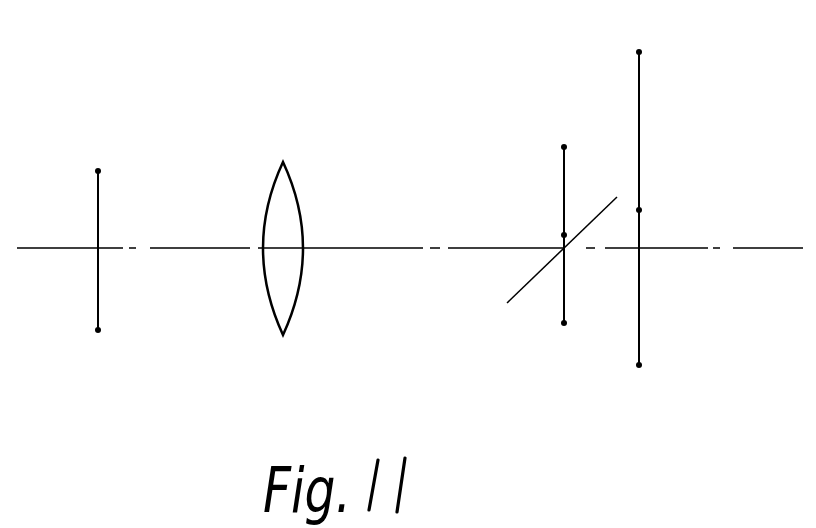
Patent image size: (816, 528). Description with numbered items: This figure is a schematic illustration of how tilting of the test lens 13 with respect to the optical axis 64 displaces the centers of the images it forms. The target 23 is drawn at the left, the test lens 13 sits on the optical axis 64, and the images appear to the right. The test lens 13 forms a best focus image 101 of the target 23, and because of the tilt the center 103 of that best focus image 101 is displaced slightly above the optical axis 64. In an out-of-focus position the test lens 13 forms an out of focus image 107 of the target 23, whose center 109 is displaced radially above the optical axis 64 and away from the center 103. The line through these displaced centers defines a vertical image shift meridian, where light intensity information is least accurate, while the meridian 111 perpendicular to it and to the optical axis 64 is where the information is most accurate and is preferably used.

The target 23 is at (98, 199).
The test lens 13 is at (272, 298).
The optical axis 64 is at (365, 248).
The best focus image 101 is at (564, 168).
The center of best focus image 103 is at (564, 235).
The meridian 111 is at (522, 292).
The out of focus image 107 is at (639, 113).
The center of out of focus image 109 is at (640, 210).